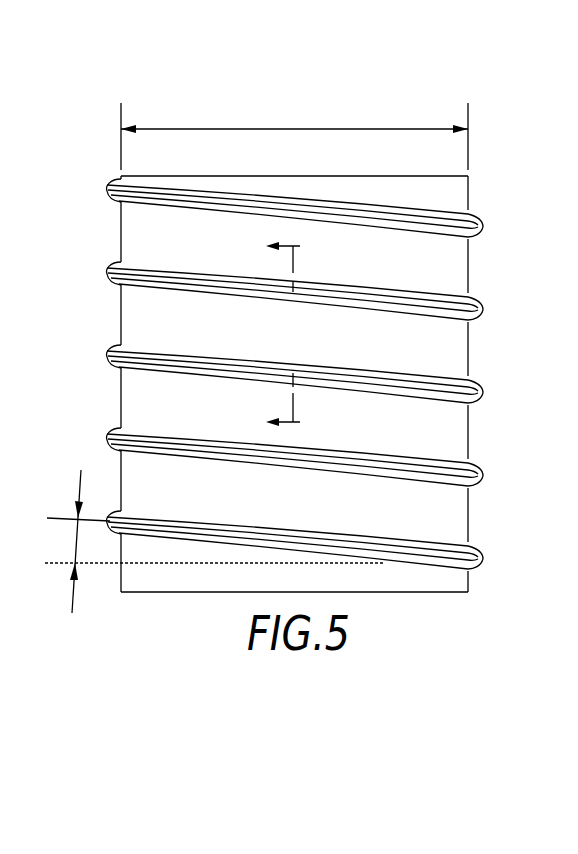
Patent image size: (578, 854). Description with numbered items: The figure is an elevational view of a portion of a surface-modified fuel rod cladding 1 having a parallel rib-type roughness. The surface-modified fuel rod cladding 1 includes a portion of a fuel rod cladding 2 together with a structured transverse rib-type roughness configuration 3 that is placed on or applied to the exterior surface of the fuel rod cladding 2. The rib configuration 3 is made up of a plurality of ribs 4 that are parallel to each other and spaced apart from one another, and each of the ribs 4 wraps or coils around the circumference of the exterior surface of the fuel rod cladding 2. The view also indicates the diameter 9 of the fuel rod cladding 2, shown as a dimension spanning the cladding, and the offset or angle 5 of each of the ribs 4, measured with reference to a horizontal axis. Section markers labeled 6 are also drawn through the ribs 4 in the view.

The surface-modified fuel rod cladding 1 is at (83, 143).
The fuel rod cladding 2 is at (208, 592).
The structured transverse rib-type roughness configuration 3 is at (458, 216).
The ribs 4 is at (483, 227).
The offset or angle 5 is at (66, 546).
The section line 6- 6 is at (297, 335).
The diameter 9 is at (298, 129).